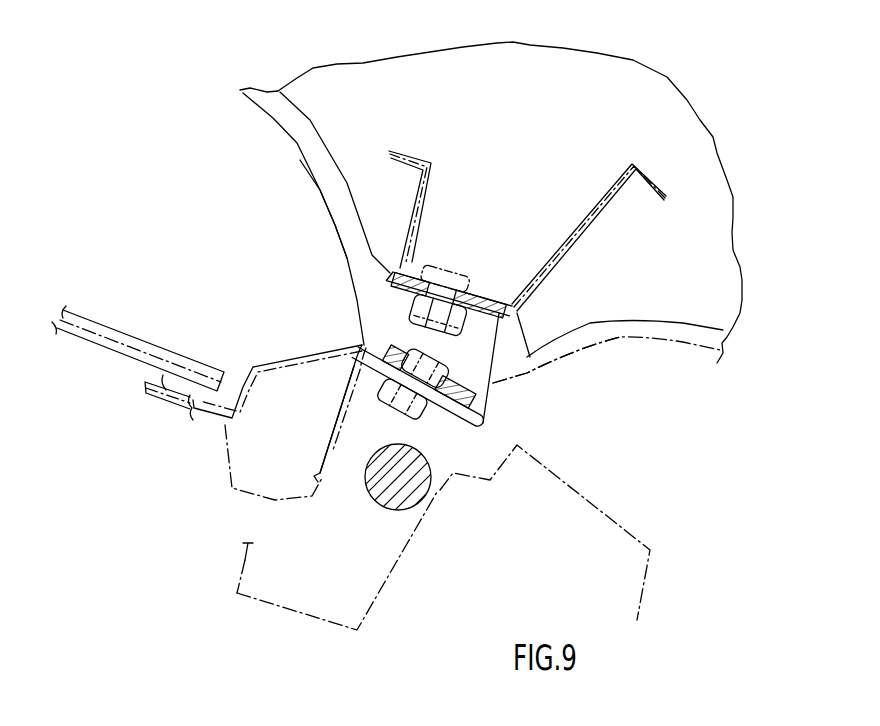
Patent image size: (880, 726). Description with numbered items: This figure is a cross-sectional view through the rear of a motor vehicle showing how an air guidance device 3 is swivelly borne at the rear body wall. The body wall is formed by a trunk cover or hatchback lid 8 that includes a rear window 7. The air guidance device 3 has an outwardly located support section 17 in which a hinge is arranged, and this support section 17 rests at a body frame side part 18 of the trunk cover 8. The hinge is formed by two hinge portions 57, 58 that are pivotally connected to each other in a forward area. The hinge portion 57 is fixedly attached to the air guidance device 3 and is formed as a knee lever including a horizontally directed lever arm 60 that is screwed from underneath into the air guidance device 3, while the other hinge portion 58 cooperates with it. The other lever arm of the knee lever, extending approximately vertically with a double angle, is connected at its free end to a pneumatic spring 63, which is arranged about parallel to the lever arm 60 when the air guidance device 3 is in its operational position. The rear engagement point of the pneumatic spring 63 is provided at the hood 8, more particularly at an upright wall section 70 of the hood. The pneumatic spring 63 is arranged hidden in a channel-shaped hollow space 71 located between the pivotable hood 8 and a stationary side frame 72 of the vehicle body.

The air guidance device 3 is at (491, 212).
The rear window 7 is at (135, 336).
The trunk cover 8 is at (210, 362).
The support section 17 is at (330, 218).
The body frame side part 18 is at (313, 352).
The hinge portion 57 is at (413, 265).
The hinge portion 58 is at (495, 387).
The lever arm 60 is at (485, 280).
The pneumatic spring 63 is at (385, 488).
The upright wall section 70 is at (338, 428).
The channel-shaped hollow space 71 is at (420, 387).
The side frame 72 is at (461, 476).